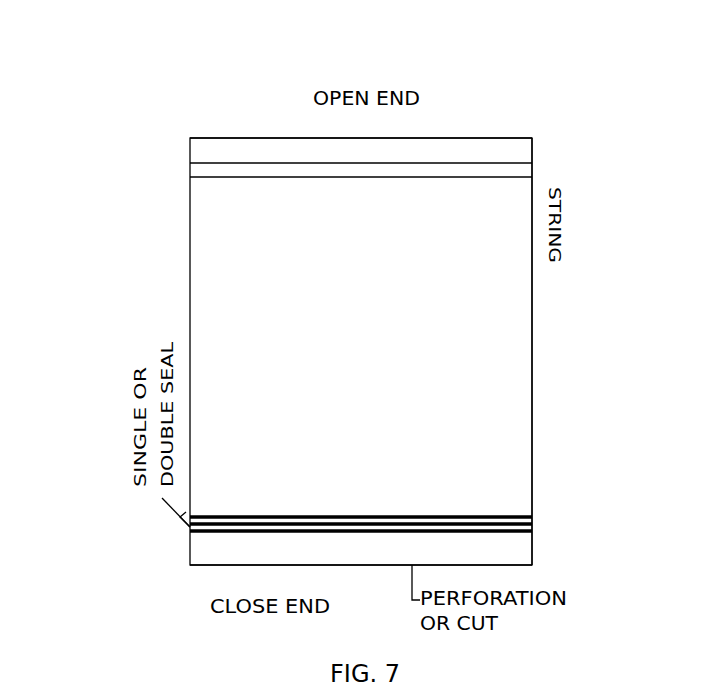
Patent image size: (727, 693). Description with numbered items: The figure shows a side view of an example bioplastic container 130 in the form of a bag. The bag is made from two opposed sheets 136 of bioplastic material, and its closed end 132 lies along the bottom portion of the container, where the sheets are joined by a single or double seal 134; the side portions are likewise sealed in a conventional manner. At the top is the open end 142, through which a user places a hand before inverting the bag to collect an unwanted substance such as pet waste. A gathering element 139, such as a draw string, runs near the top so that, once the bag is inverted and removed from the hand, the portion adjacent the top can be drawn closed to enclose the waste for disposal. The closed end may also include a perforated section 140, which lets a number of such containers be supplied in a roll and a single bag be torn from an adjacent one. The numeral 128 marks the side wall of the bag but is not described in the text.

The bioplastic container 130 is at (496, 116).
The open end 142 is at (272, 138).
The gathering element 139 is at (540, 172).
The opposed sheets 136 is at (504, 338).
The bag side wall 128 is at (532, 416).
The single or double seal 134 is at (508, 514).
The closed end 132 is at (214, 540).
The perforated section 140 is at (390, 565).